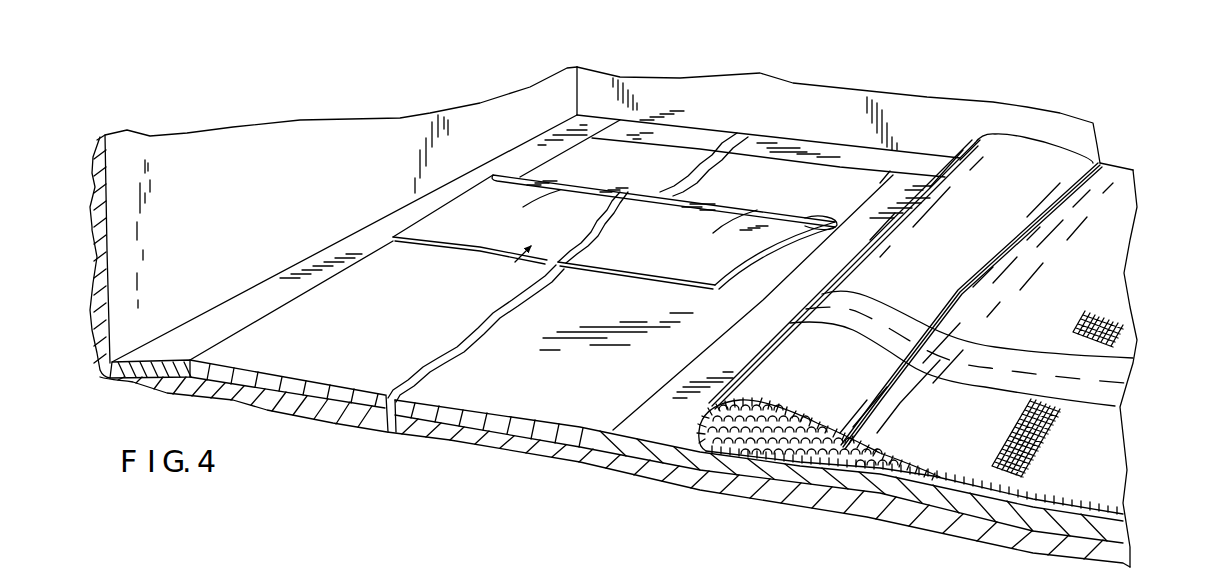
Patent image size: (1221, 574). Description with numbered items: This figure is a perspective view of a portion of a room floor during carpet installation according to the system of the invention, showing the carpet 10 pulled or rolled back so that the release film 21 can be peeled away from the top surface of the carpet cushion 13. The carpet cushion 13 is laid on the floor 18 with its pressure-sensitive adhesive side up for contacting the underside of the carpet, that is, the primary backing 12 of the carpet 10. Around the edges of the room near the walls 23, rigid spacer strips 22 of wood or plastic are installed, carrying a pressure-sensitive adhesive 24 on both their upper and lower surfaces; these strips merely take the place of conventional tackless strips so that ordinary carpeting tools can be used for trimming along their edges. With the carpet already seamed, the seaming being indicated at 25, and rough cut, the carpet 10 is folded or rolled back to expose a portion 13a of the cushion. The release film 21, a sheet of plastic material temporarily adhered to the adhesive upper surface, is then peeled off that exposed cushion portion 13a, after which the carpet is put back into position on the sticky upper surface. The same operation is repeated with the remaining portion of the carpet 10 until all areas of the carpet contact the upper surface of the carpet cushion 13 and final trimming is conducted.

The carpet 10 is at (1050, 140).
The primary backing 12 is at (1124, 287).
The carpet cushion 13 is at (425, 430).
The portion of the cushion 13a is at (633, 151).
The floor 18 is at (512, 447).
The release film 21 is at (612, 258).
The spacer strips 22 is at (340, 236).
The walls 23 is at (374, 172).
The pressure-sensitive adhesive 24 is at (243, 297).
The carpet seaming 25 is at (893, 310).